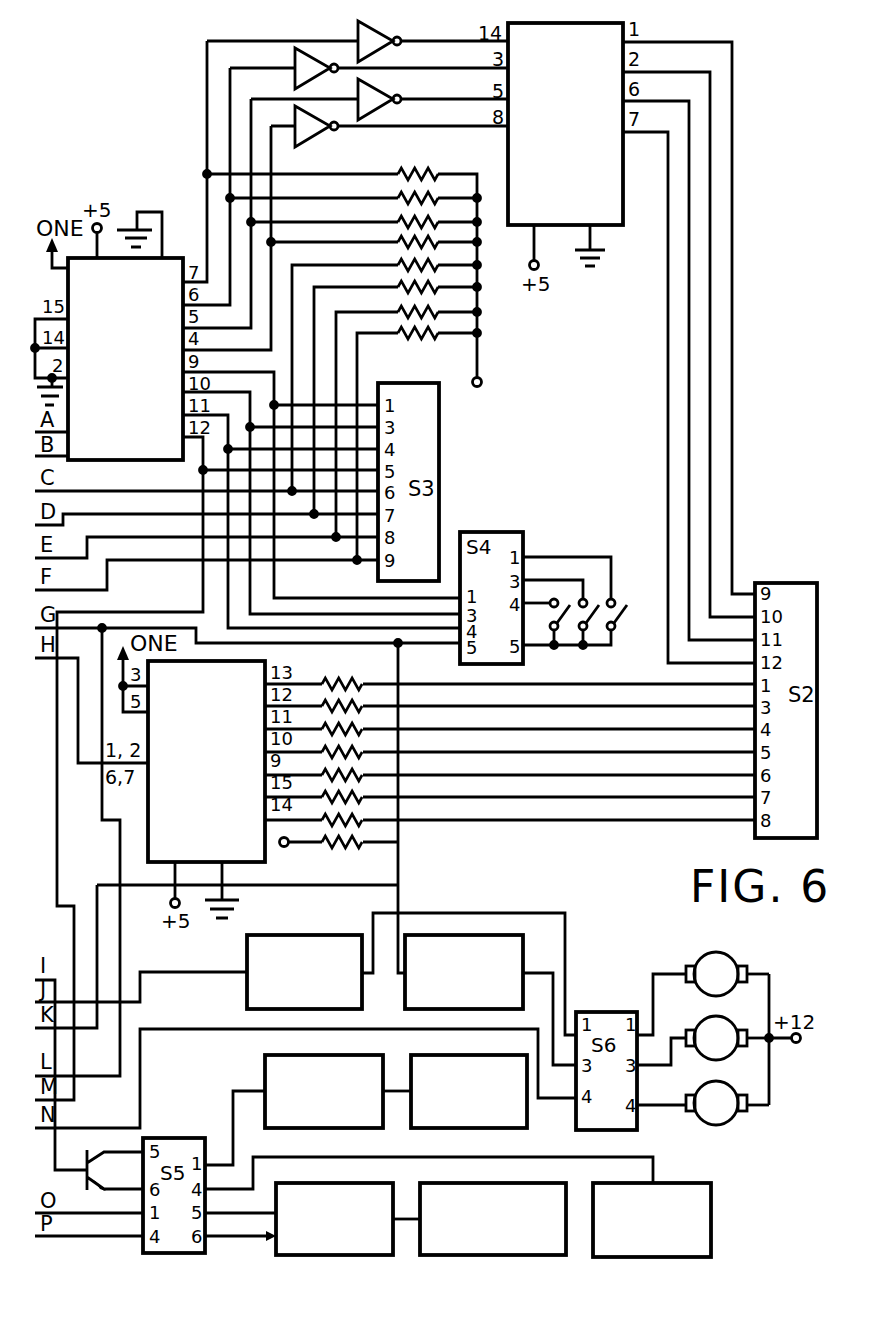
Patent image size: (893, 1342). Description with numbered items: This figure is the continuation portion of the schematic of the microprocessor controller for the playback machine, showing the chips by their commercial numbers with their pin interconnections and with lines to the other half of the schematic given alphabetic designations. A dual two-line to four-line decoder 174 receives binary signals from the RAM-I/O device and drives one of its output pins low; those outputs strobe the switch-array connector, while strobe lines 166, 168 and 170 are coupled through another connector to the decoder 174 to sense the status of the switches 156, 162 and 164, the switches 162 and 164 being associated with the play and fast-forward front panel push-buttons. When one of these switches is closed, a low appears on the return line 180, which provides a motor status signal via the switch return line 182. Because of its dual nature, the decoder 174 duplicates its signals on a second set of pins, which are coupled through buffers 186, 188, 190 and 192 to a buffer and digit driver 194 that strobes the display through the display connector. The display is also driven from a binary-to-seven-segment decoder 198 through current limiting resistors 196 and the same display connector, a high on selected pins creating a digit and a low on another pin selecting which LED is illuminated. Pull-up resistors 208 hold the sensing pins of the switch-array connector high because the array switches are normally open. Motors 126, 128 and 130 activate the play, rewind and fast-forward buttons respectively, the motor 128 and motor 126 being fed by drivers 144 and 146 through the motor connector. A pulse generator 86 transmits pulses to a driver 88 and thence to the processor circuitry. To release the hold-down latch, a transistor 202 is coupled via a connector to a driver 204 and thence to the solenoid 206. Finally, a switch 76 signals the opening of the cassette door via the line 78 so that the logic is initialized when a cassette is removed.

The dual two-line to four-line decoder 174 is at (145, 423).
The buffer 186 is at (391, 46).
The buffer 188 is at (293, 70).
The buffer 190 is at (393, 104).
The buffer 192 is at (330, 131).
The buffer and digit driver 194 is at (578, 195).
The pull-up resistors 208 is at (426, 346).
The binary-to-7 segment decoder 198 is at (186, 820).
The current limiting resistors 196 is at (356, 678).
The switch return line 182 is at (270, 808).
The strobe line 170 is at (537, 600).
The strobe line 168 is at (560, 580).
The strobe line 166 is at (592, 558).
The switch 164 is at (612, 630).
The switch 162 is at (590, 648).
The switch 156 is at (550, 645).
The return line 180 is at (585, 648).
The driver 146 is at (285, 1007).
The driver 144 is at (445, 1007).
The driver 88 is at (311, 1125).
The pulse generator 86 is at (418, 1120).
The driver 204 is at (315, 1252).
The solenoid 206 is at (474, 1252).
The switch 76 is at (639, 1253).
The line 78 is at (514, 1161).
The transistor 202 is at (100, 1156).
The motor 126 is at (717, 955).
The motor 128 is at (719, 1020).
The motor 130 is at (717, 1087).